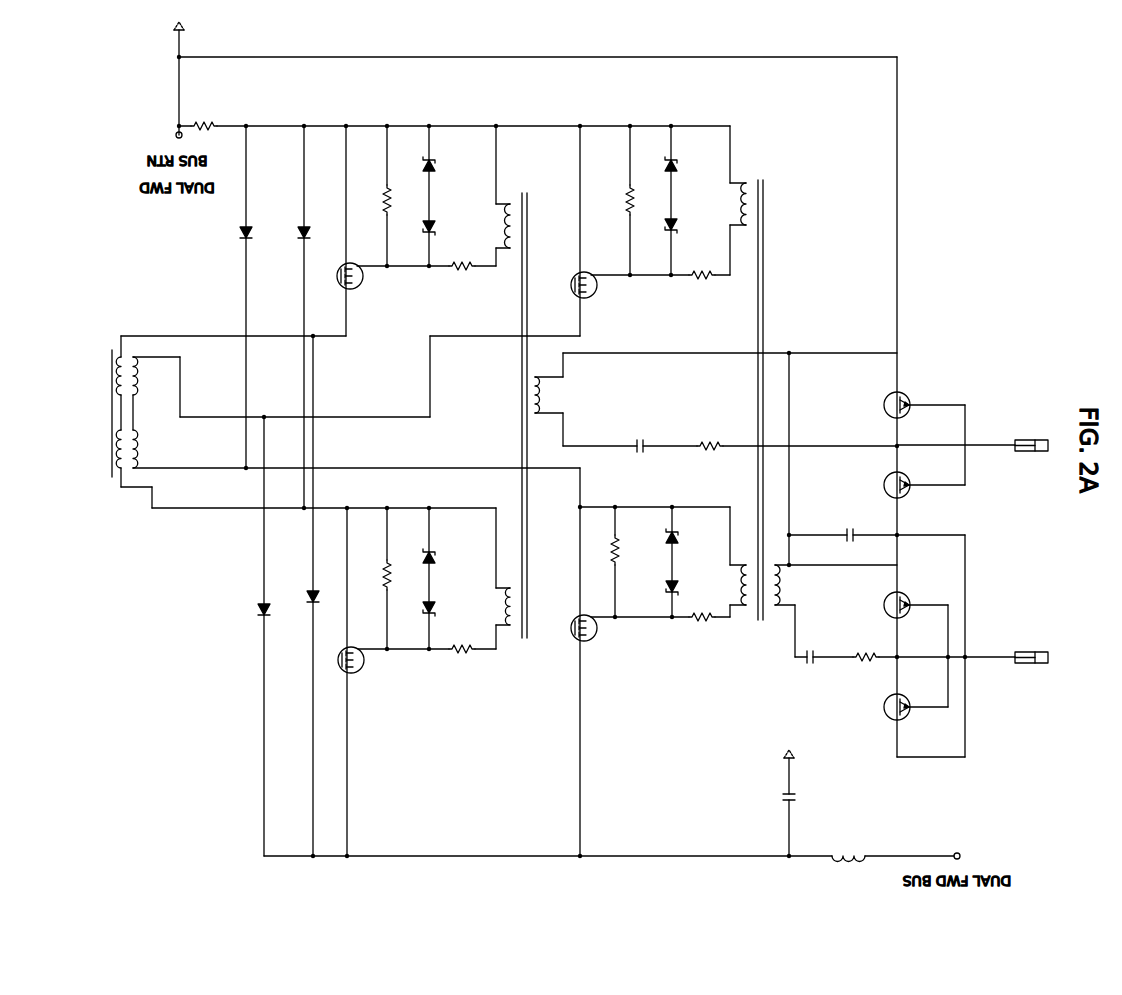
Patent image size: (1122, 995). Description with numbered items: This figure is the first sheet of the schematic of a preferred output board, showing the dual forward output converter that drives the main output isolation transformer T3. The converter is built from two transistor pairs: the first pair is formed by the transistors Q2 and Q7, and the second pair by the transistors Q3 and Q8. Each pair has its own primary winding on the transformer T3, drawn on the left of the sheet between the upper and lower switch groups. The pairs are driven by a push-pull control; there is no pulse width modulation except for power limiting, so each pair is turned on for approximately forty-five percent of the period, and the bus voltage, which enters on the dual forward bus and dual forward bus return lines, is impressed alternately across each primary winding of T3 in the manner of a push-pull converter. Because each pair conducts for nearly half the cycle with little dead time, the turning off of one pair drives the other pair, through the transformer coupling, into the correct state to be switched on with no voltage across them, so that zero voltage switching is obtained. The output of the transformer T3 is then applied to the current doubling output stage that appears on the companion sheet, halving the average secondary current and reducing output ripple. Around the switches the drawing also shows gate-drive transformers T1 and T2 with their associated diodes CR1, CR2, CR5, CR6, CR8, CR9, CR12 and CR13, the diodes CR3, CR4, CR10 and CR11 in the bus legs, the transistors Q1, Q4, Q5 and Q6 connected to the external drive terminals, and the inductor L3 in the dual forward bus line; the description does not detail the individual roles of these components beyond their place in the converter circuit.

The transistor Q1 is at (887, 709).
The transistor Q2 is at (569, 628).
The transistor Q3 is at (360, 671).
The transistor Q4 is at (887, 607).
The transistor Q5 is at (887, 485).
The transistor Q6 is at (887, 405).
The transistor Q7 is at (570, 285).
The transistor Q8 is at (354, 290).
The zener diode CR1 is at (651, 588).
The zener diode CR2 is at (449, 612).
The diode CR3 is at (297, 619).
The diode CR4 is at (243, 612).
The zener diode CR5 is at (651, 536).
The zener diode CR6 is at (450, 556).
The zener diode CR8 is at (659, 236).
The zener diode CR9 is at (448, 227).
The diode CR10 is at (287, 245).
The diode CR11 is at (224, 245).
The zener diode CR12 is at (691, 162).
The zener diode CR13 is at (452, 164).
The transformer T1 is at (760, 417).
The transformer T2 is at (522, 431).
The main output isolation transformer T3 is at (122, 438).
The inductor L3 is at (848, 876).